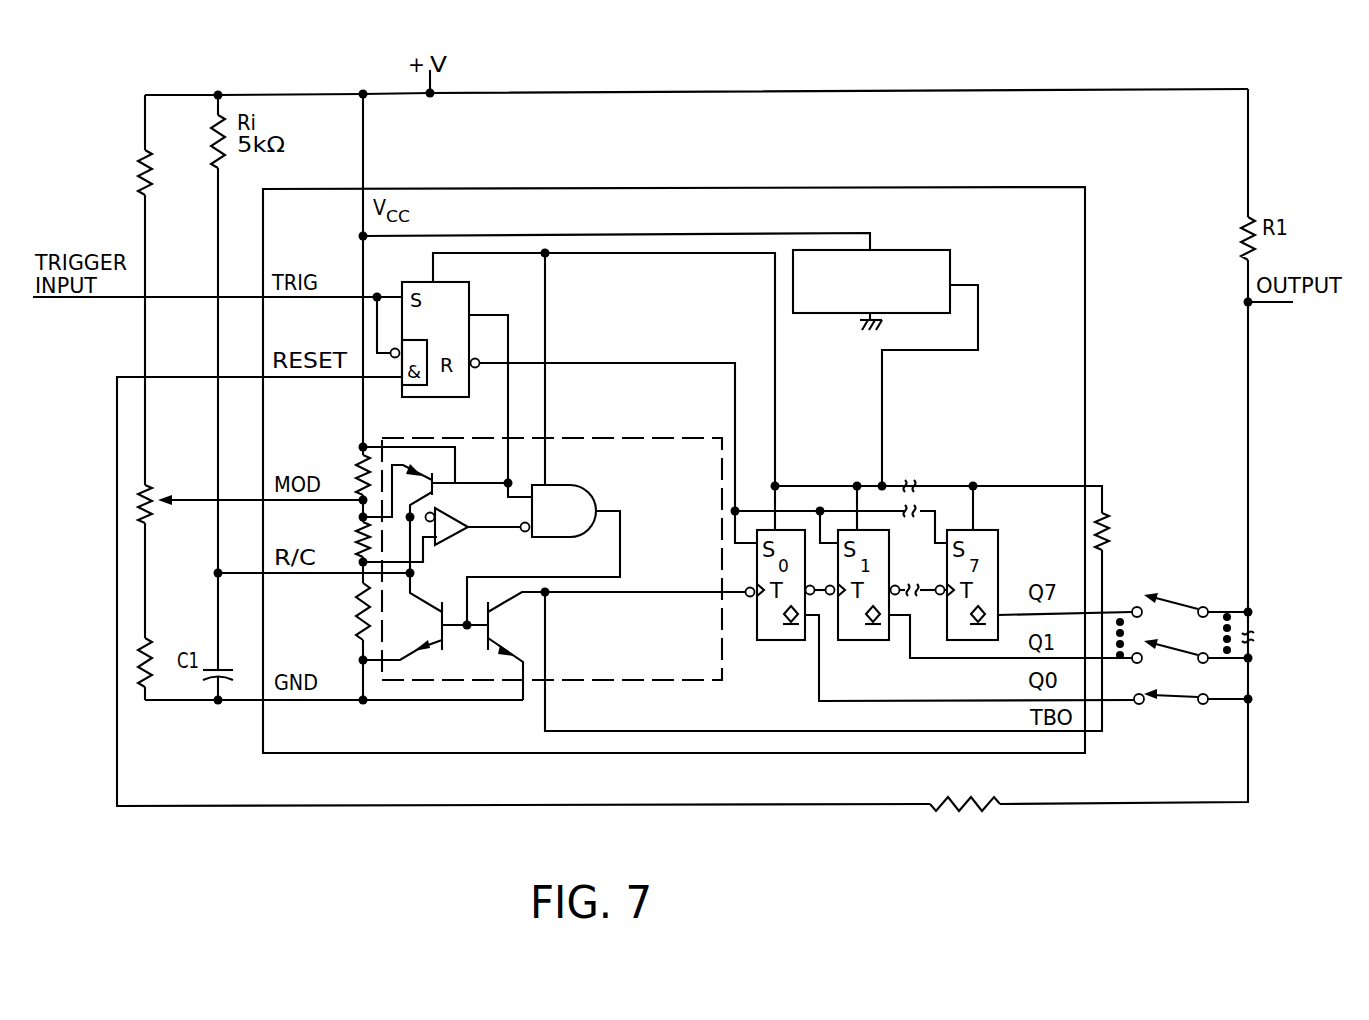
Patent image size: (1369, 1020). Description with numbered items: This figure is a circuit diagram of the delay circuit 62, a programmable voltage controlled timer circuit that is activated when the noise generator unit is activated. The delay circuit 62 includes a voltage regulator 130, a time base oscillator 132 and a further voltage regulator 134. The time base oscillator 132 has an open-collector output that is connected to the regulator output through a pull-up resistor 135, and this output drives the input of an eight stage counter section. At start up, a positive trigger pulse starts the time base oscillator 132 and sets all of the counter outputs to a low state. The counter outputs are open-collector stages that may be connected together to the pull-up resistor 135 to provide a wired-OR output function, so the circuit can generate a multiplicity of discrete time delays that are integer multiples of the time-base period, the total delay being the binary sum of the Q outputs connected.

The delay circuit 62 is at (628, 73).
The voltage regulator 130 is at (892, 220).
The time base oscillator 132 is at (615, 496).
The voltage regulator 134 is at (1026, 360).
The pull-up resistor 135 is at (1265, 200).